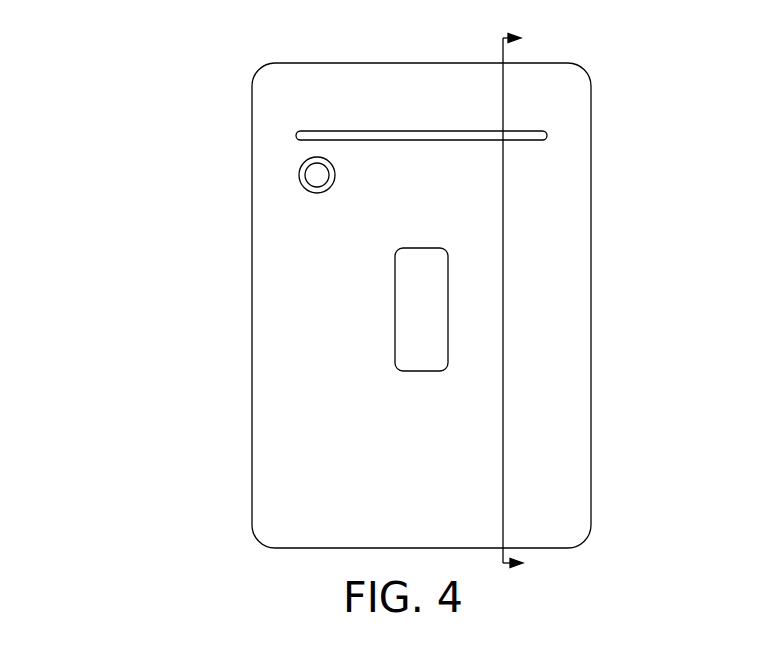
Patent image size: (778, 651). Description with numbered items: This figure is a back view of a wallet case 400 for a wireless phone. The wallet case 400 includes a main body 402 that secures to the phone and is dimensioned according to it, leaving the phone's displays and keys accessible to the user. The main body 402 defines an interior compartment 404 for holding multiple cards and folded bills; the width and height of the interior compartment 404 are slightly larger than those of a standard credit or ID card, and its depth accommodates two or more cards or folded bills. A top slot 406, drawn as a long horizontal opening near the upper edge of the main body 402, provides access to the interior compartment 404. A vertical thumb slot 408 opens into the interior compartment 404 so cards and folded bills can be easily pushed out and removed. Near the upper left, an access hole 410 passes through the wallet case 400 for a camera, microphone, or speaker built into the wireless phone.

The wallet case 400 is at (143, 66).
The main body 402 is at (591, 305).
The interior compartment 404 is at (420, 302).
The top slot 406 is at (547, 137).
The vertical thumb slot 408 is at (385, 307).
The access hole 410 is at (290, 172).